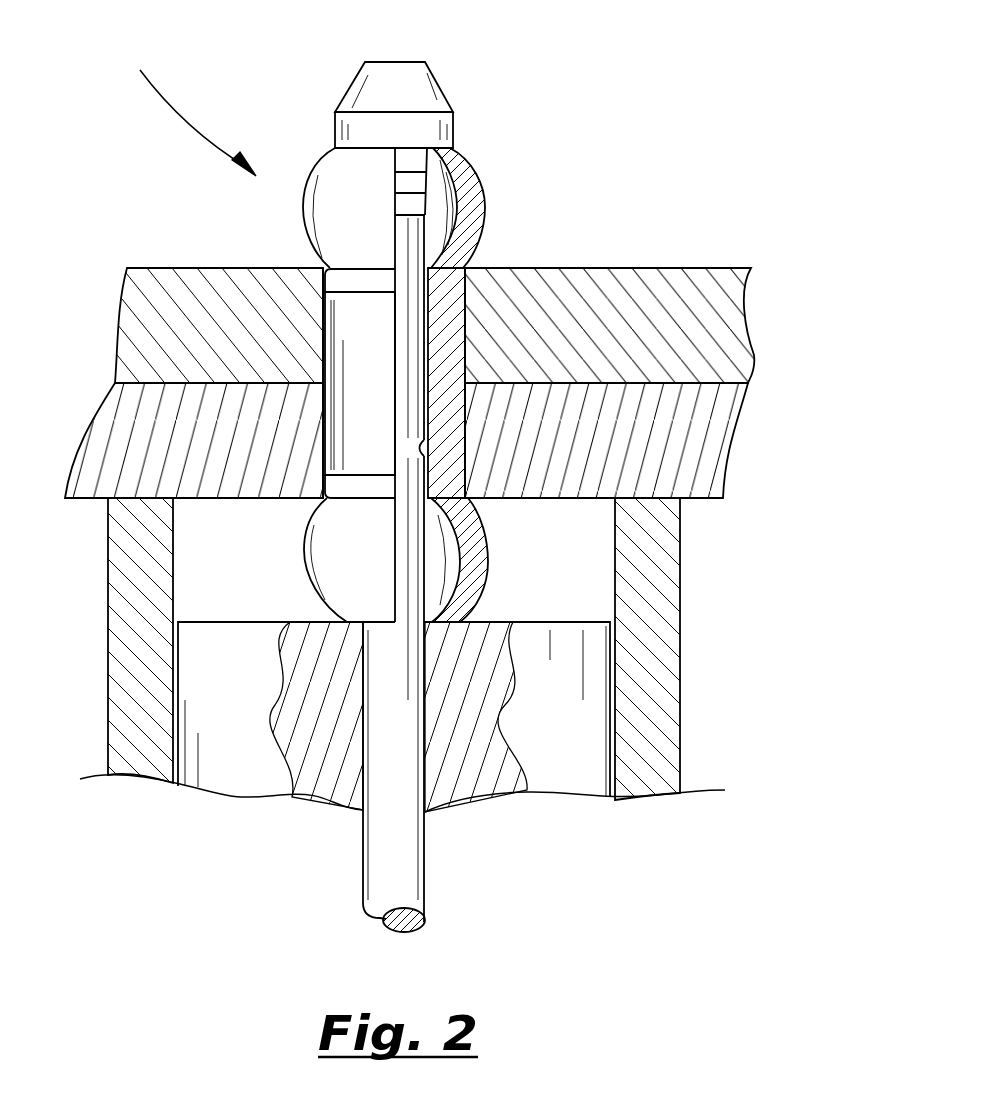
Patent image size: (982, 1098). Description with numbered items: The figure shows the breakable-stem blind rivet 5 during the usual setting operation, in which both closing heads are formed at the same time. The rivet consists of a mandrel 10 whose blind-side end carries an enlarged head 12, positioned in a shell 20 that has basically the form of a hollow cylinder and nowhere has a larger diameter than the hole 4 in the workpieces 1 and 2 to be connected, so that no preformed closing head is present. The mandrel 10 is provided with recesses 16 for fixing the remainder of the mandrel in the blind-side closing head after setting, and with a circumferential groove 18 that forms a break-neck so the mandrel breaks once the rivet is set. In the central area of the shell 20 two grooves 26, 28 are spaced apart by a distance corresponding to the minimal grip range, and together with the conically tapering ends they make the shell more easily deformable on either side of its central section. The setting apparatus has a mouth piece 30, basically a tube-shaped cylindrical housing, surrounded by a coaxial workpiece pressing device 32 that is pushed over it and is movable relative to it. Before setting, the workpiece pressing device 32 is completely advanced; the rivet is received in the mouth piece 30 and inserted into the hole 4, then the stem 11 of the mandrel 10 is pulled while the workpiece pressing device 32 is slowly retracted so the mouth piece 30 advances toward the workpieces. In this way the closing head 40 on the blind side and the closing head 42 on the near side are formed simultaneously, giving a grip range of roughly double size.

The workpiece 1 is at (715, 335).
The workpiece 2 is at (705, 447).
The hole 4 is at (320, 362).
The breakable-stem blind rivet 5 is at (192, 105).
The mandrel 10 is at (406, 743).
The stem 11 is at (405, 852).
The head 12 is at (440, 122).
The recesses 16 is at (544, 361).
The circumferential groove 18 is at (422, 443).
The shell 20 is at (381, 373).
The groove 26 is at (340, 272).
The groove 28 is at (320, 490).
The mouth piece 30 is at (235, 758).
The workpiece pressing device 32 is at (658, 692).
The closing head on the blind side 40 is at (470, 217).
The closing head on the near side 42 is at (468, 572).